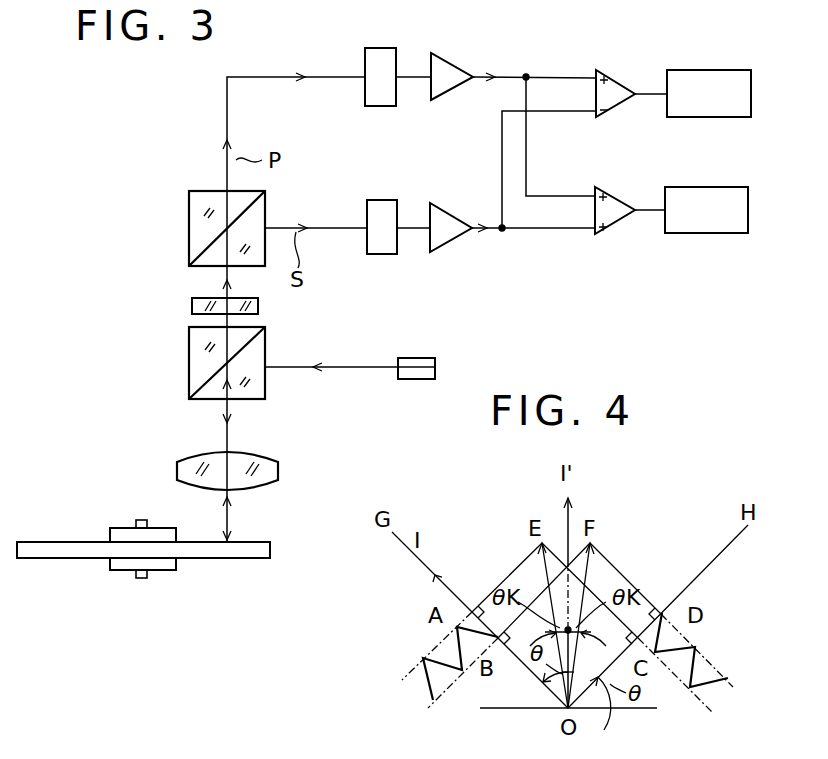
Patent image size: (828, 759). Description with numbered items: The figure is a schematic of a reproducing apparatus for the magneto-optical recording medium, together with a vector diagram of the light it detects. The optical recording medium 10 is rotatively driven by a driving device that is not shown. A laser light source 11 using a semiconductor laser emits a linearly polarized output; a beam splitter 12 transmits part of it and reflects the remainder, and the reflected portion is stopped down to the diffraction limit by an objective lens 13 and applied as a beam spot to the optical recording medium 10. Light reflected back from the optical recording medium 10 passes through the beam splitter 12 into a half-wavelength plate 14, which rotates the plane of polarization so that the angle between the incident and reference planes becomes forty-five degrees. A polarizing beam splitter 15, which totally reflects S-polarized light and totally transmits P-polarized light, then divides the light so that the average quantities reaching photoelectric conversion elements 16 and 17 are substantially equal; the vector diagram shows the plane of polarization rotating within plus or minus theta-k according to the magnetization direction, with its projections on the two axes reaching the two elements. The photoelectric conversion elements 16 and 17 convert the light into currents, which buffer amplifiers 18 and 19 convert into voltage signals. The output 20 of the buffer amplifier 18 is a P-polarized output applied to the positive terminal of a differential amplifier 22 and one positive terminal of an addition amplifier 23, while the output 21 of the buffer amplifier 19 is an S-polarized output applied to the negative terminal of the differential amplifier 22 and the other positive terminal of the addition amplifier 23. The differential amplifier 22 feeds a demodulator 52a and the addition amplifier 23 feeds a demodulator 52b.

The optical recording medium 10 is at (66, 542).
The laser light source 11 is at (416, 380).
The beam splitter 12 is at (189, 367).
The objective lens 13 is at (182, 462).
The half-wavelength plate 14 is at (192, 307).
The polarizing beam splitter 15 is at (189, 233).
The photoelectric conversion element 16 is at (365, 60).
The photoelectric conversion element 17 is at (378, 200).
The buffer amplifier 18 is at (451, 59).
The buffer amplifier 19 is at (453, 209).
The output of the buffer amplifier 18 20 is at (507, 77).
The output of the buffer amplifier 19 21 is at (488, 237).
The differential amplifier 22 is at (611, 70).
The addition amplifier 23 is at (610, 187).
The demodulator 52a is at (706, 70).
The demodulator 52b is at (706, 187).